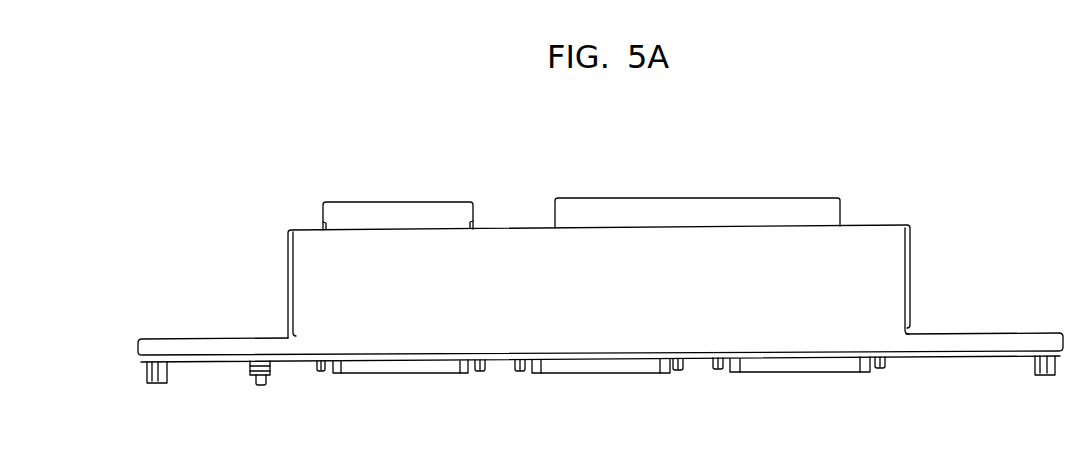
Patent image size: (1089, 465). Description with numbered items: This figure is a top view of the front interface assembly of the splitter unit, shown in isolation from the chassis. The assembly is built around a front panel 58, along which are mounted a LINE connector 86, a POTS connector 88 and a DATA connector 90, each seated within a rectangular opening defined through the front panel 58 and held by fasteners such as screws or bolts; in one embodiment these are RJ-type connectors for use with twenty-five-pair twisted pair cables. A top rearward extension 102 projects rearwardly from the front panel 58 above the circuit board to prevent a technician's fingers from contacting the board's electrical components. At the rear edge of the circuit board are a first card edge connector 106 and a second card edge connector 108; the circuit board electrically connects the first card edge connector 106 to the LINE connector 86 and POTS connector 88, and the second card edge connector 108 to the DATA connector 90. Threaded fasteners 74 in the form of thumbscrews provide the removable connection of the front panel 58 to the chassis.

The front panel 58 is at (952, 355).
The threaded fastener 74 is at (157, 385).
The LINE connector 86 is at (802, 373).
The POTS connector 88 is at (612, 374).
The DATA connector 90 is at (425, 373).
The top rearward extension 102 is at (863, 226).
The first card edge connector 106 is at (727, 198).
The second card edge connector 108 is at (408, 200).